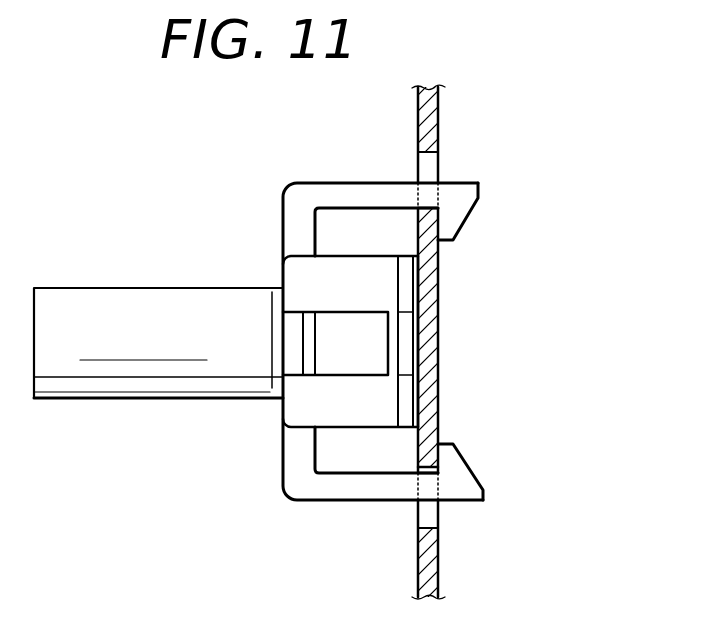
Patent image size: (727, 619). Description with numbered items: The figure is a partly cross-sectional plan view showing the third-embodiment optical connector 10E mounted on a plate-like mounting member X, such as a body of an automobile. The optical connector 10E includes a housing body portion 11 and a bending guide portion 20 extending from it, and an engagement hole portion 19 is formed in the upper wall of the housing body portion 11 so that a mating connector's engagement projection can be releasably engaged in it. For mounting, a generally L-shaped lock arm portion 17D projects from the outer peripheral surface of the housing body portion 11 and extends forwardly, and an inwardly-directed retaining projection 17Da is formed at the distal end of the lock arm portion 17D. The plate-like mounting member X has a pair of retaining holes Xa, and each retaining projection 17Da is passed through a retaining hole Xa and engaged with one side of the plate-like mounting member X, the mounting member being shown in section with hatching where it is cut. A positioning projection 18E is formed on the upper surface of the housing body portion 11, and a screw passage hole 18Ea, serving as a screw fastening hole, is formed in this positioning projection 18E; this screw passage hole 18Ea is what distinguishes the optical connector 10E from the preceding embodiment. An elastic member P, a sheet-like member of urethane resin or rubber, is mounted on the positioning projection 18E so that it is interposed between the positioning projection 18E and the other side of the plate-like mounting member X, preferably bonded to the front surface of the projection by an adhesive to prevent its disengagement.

The optical connector 10E is at (177, 230).
The housing body portion 11 is at (377, 386).
The lock arm portion 17D is at (353, 187).
The retaining projection 17Da is at (470, 213).
The positioning projection 18E is at (405, 277).
The screw passage hole 18Ea is at (403, 313).
The engagement hole portion 19 is at (388, 343).
The bending guide portion 20 is at (102, 393).
The plate-like mounting member X is at (438, 112).
The retaining hole Xa is at (433, 160).
The elastic member P is at (437, 423).